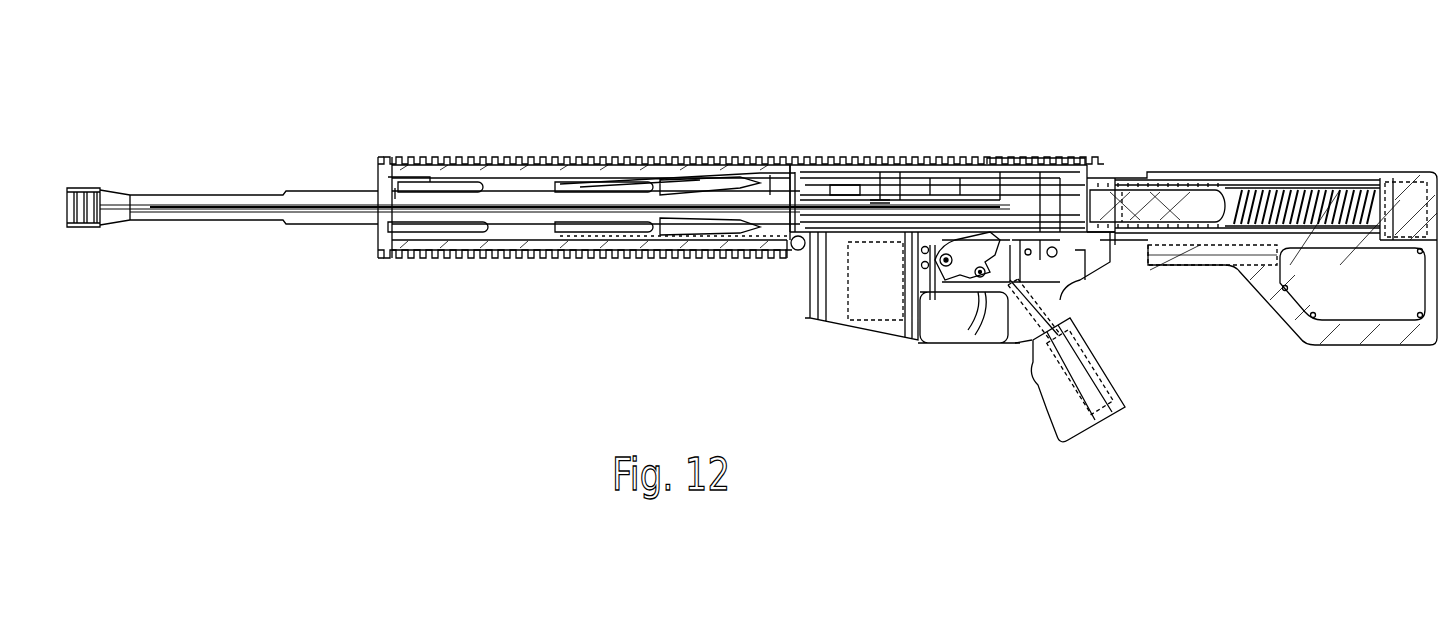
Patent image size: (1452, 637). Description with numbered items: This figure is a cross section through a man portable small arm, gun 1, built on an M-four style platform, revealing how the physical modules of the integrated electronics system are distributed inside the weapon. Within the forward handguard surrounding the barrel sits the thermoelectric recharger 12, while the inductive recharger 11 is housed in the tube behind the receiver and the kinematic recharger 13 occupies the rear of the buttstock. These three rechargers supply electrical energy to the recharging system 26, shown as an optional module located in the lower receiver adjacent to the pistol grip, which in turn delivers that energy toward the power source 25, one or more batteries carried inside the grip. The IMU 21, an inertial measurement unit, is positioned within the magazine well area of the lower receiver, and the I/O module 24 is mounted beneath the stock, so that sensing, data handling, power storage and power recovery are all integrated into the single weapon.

The gun 1 is at (352, 90).
The thermoelectric recharger 12 is at (722, 186).
The inductive recharger 11 is at (1160, 182).
The kinematic recharger 13 is at (1405, 188).
The input/output (I/O) module 24 is at (1225, 258).
The IMU 21 is at (860, 318).
The recharging system 26 is at (1035, 348).
The power source 25 is at (1140, 425).